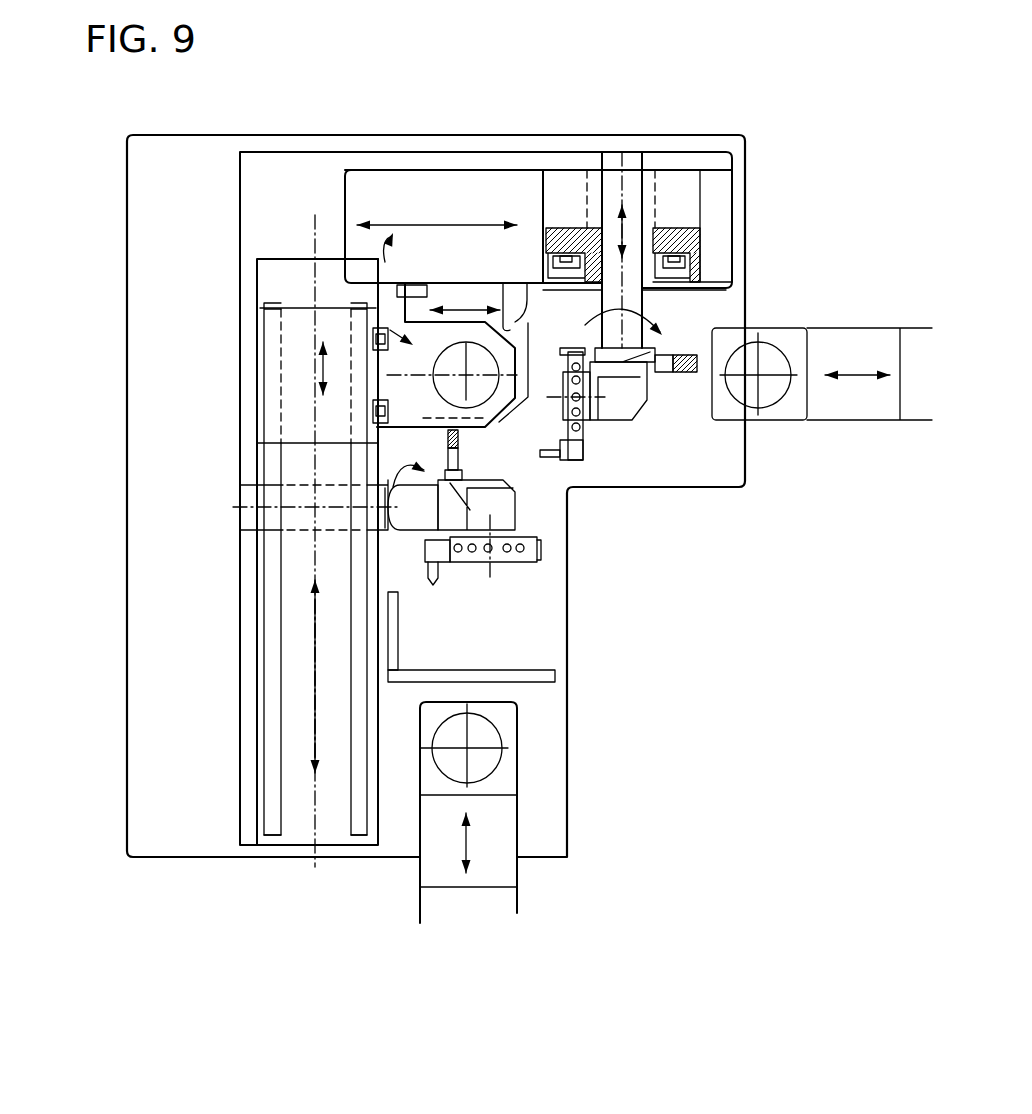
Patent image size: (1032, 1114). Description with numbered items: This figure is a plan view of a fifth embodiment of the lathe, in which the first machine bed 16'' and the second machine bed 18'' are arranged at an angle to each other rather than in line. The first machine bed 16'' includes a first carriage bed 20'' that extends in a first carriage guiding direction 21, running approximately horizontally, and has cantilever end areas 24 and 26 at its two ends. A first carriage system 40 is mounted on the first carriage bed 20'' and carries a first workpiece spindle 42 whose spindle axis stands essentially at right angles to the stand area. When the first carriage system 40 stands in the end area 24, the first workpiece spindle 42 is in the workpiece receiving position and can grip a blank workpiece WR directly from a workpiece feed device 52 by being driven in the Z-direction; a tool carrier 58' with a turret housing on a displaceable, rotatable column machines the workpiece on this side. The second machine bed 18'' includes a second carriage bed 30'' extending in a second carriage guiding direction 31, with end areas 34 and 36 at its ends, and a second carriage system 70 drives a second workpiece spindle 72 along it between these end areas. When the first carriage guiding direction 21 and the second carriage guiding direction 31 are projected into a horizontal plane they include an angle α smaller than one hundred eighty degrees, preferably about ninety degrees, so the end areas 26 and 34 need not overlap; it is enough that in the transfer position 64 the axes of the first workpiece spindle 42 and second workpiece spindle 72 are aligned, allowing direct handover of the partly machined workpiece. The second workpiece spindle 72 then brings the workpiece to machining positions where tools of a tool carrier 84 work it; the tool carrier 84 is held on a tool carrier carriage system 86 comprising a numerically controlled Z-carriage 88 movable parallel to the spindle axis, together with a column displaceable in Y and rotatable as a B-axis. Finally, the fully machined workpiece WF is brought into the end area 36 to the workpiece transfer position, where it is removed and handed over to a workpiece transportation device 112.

The first machine bed 16'' is at (233, 498).
The second machine bed 18'' is at (582, 163).
The first carriage bed 20'' is at (193, 676).
The first carriage guiding direction 21 is at (313, 706).
The cantilever end area 24 is at (295, 823).
The cantilever end area 26 is at (270, 280).
The second carriage bed 30'' is at (623, 189).
The second carriage guiding direction 31 is at (388, 225).
The end area 34 is at (403, 187).
The end area 36 is at (722, 225).
The first carriage system 40 is at (372, 333).
The first workpiece spindle 42 is at (463, 377).
The workpiece feed device 52 is at (507, 872).
The tool carrier 58' is at (535, 598).
The transfer position 64 is at (393, 413).
The second carriage system 70 is at (529, 320).
The second workpiece spindle 72 is at (500, 283).
The tool carrier 84 is at (628, 434).
The tool carrier carriage system 86 is at (660, 206).
The Z-carriage 88 is at (667, 277).
The workpiece transportation device 112 is at (865, 408).
The fully machined workpiece WF is at (777, 393).
The blank workpiece WR is at (482, 760).